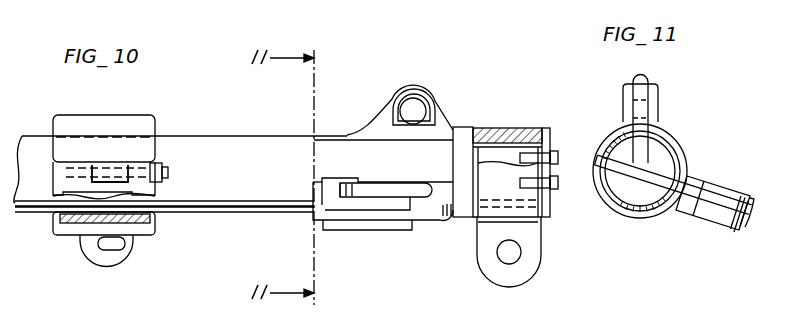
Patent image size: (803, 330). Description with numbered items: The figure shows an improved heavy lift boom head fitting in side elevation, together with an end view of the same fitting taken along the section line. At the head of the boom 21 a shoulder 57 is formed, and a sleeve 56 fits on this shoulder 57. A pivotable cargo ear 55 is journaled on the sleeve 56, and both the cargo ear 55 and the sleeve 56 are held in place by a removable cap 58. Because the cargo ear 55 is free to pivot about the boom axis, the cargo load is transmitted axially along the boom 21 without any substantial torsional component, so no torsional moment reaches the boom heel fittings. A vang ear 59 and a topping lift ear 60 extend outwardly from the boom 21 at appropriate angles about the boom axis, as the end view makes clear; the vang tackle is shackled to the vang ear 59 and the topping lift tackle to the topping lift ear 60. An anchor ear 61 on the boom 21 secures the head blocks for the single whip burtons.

In FIG. 10, the boom 21 is at (213, 147).
In FIG. 11, the boom 21 is at (681, 142).
In FIG. 10, the pivotable cargo ear 55 is at (537, 258).
In FIG. 10, the sleeve 56 is at (477, 129).
In FIG. 10, the shoulder 57 is at (478, 213).
In FIG. 10, the removable cap 58 is at (548, 214).
In FIG. 10, the vang ear 59 is at (365, 221).
In FIG. 11, the vang ear 59 is at (706, 219).
In FIG. 10, the topping lift ear 60 is at (398, 102).
In FIG. 11, the topping lift ear 60 is at (652, 90).
In FIG. 10, the anchor ear 61 is at (107, 261).